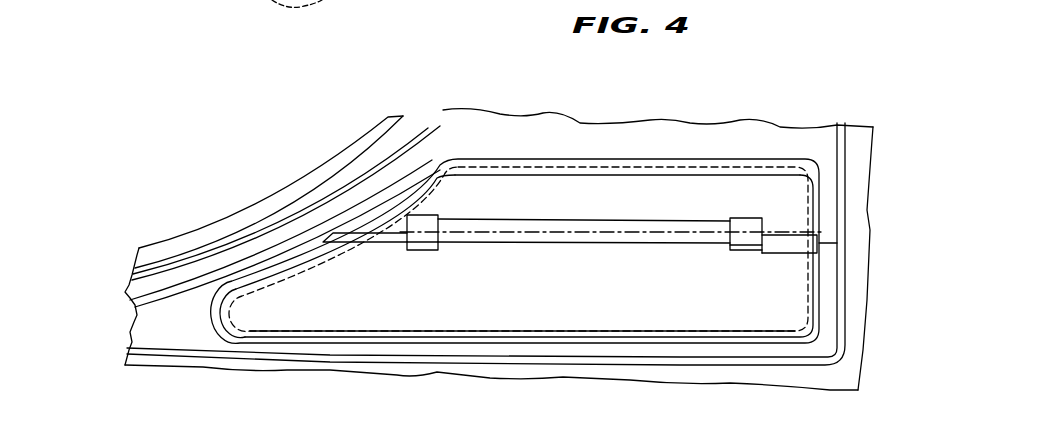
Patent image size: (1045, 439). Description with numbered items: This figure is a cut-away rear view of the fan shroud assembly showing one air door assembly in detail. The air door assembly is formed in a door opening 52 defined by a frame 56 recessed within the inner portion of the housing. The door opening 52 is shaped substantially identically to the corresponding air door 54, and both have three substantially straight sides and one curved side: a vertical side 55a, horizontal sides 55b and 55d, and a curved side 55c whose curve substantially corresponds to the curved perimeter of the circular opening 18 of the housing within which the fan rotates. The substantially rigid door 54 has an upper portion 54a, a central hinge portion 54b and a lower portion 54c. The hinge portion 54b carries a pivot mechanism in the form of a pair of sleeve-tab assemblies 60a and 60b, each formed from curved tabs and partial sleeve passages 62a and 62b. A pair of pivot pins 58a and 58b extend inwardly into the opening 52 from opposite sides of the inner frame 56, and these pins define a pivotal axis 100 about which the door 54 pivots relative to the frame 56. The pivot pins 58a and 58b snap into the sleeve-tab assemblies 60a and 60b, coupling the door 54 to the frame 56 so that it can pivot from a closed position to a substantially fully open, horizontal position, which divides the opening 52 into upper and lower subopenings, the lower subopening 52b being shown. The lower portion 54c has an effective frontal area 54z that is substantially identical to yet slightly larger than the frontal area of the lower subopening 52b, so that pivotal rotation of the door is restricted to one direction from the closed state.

The circular opening 18 is at (200, 230).
The door opening 52 is at (574, 181).
The lower subopening 52b is at (736, 317).
The air door 54 is at (657, 316).
The upper portion 54a is at (529, 204).
The central hinge portion 54b is at (682, 232).
The lower portion 54c is at (580, 300).
The effective frontal area 54z is at (359, 318).
The vertical side 55a is at (818, 277).
The horizontal side 55b is at (510, 160).
The curved side 55c is at (298, 255).
The horizontal side 55d is at (370, 337).
The frame 56 is at (681, 179).
The pivot pin 58a is at (790, 254).
The pivot pin 58b is at (396, 244).
The sleeve-tab assembly 60a is at (742, 217).
The sleeve-tab assembly 60b is at (425, 217).
The partial sleeve passage 62a is at (747, 242).
The partial sleeve passage 62b is at (428, 244).
The pivotal axis 100 is at (576, 233).